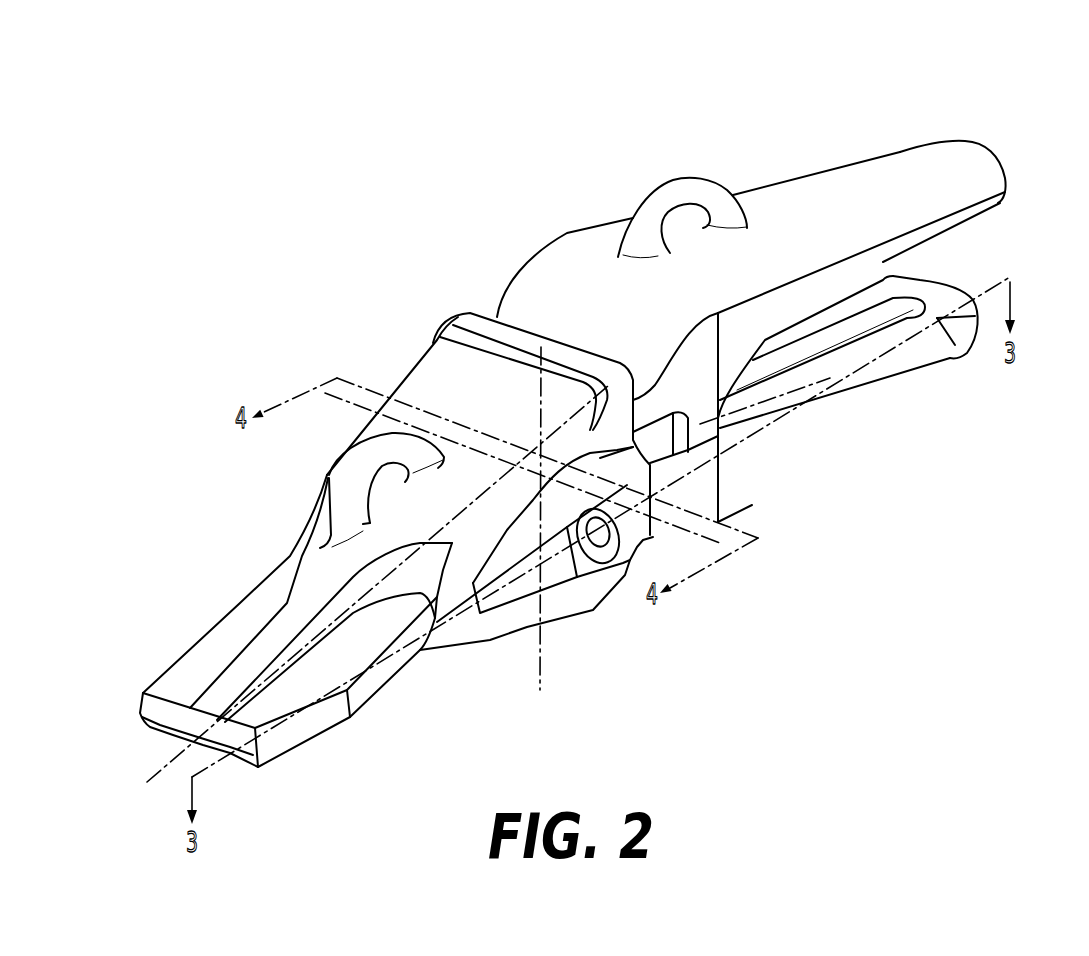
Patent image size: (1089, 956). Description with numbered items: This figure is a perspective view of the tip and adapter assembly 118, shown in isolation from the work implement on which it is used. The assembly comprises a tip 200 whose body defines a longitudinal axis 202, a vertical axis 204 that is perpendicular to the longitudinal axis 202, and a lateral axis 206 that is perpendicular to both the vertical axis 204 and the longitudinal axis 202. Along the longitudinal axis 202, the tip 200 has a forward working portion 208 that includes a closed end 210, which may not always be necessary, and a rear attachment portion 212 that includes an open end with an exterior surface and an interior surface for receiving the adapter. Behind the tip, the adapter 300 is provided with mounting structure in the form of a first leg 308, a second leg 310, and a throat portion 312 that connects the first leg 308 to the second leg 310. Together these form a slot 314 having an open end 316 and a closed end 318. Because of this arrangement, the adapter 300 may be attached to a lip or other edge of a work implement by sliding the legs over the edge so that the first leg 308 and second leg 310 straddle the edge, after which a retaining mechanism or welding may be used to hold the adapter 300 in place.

The tip and adapter assembly 118 is at (688, 122).
The tip 200 is at (222, 590).
The longitudinal axis 202 is at (290, 658).
The vertical axis 204 is at (715, 541).
The lateral axis 206 is at (541, 655).
The forward working portion 208 is at (337, 722).
The closed end 210 is at (229, 760).
The rear attachment portion 212 is at (450, 320).
The adapter 300 is at (862, 153).
The first leg 308 is at (953, 155).
The second leg 310 is at (932, 367).
The throat portion 312 is at (658, 450).
The slot 314 is at (965, 255).
The open end 316 is at (1003, 220).
The closed end 318 is at (680, 455).